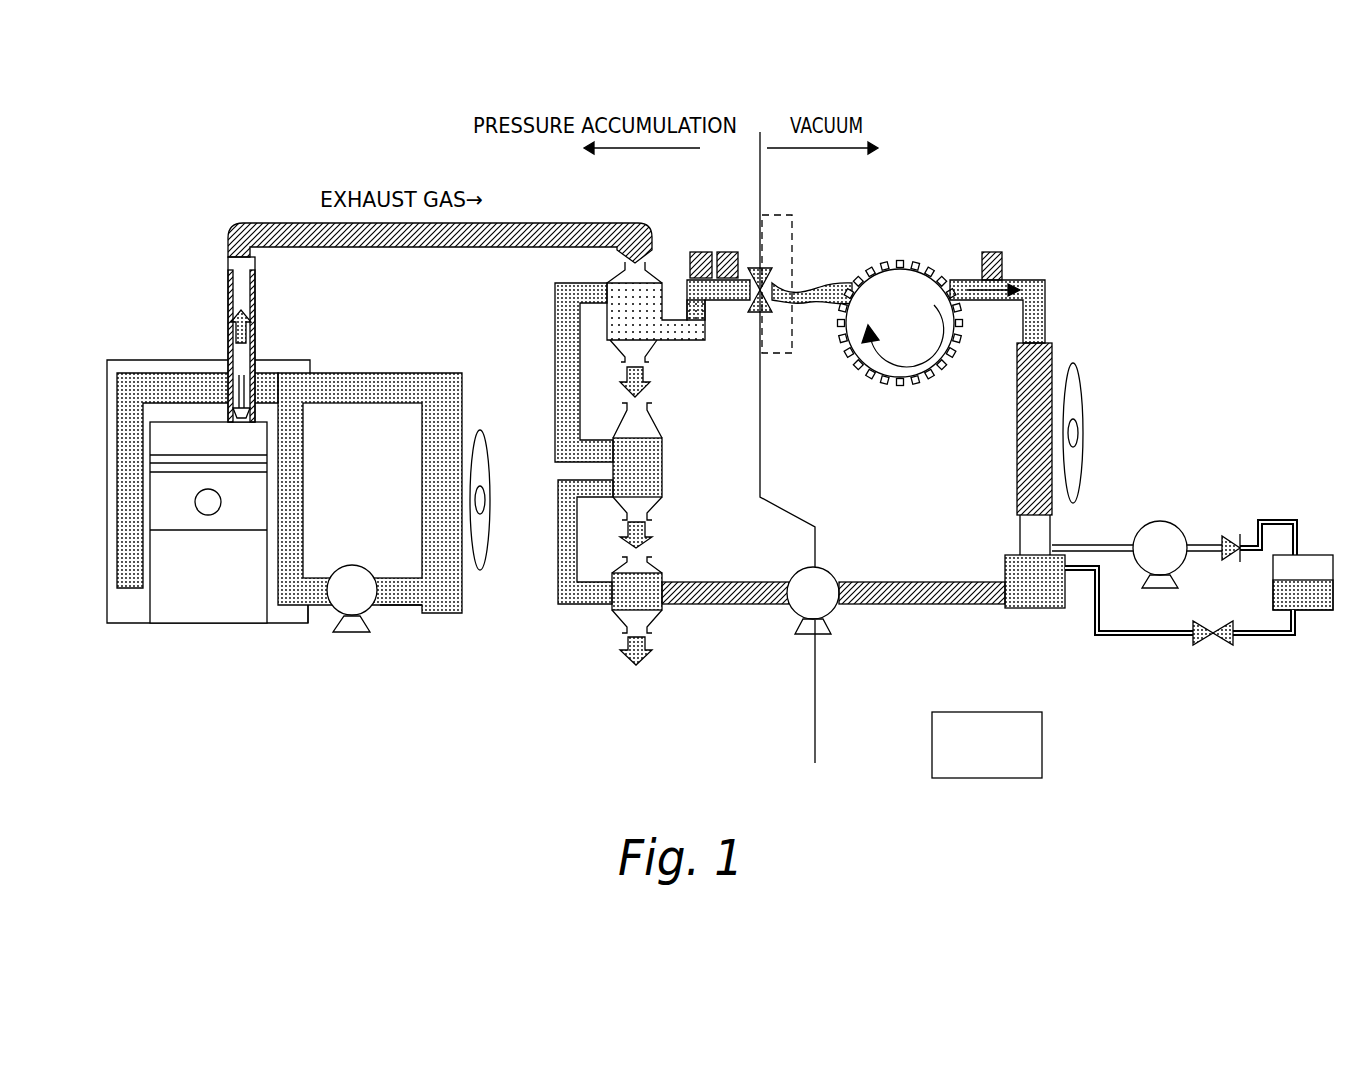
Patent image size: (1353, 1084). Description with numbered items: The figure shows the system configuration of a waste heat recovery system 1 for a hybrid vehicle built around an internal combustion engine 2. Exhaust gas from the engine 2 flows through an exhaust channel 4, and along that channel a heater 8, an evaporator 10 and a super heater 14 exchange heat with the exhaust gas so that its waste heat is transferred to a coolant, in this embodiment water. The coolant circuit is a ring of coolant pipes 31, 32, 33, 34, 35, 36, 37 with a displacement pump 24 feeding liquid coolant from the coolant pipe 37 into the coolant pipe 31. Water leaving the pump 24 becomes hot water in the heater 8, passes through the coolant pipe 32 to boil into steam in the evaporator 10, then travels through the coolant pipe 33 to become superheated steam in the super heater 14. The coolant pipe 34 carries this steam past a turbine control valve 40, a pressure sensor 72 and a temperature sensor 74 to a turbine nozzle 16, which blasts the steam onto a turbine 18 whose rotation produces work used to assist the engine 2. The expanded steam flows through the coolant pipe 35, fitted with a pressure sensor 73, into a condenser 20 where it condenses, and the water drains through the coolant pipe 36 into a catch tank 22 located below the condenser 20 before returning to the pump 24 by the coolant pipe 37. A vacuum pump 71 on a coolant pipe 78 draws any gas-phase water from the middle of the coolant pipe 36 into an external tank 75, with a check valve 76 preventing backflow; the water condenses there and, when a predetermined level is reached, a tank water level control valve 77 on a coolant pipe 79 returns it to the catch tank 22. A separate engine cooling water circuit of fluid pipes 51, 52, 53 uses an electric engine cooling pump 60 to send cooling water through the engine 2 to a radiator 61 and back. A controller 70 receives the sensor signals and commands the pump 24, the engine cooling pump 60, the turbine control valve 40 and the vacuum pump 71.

The waste heat recovery system 1 is at (216, 190).
The internal combustion engine 2 is at (106, 328).
The exhaust channel 4 is at (280, 223).
The heater 8 is at (657, 572).
The evaporator 10 is at (665, 437).
The super heater 14 is at (620, 265).
The turbine nozzle 16 is at (803, 308).
The turbine 18 is at (905, 383).
The condenser 20 is at (1054, 343).
The catch tank 22 is at (1035, 610).
The pump 24 is at (837, 615).
The coolant pipe 31 is at (704, 606).
The coolant pipe 32 is at (558, 582).
The coolant pipe 33 is at (555, 345).
The coolant pipe 34 is at (683, 343).
The coolant pipe 35 is at (960, 278).
The coolant pipe 36 is at (1055, 522).
The coolant pipe 37 is at (947, 606).
The turbine control valve 40 is at (755, 265).
The fluid pipe 51 is at (318, 610).
The fluid pipe 52 is at (362, 373).
The fluid pipe 53 is at (402, 607).
The engine cooling pump 60 is at (348, 636).
The radiator 61 is at (465, 397).
The controller 70 is at (1045, 737).
The vacuum pump 71 is at (1153, 522).
The pressure sensor 72 is at (700, 250).
The pressure sensor 73 is at (1004, 262).
The temperature sensor 74 is at (723, 250).
The external tank 75 is at (1312, 555).
The check valve 76 is at (1216, 532).
The tank water level control valve 77 is at (1210, 648).
The coolant pipe 78 is at (1200, 540).
The coolant pipe 79 is at (1278, 637).